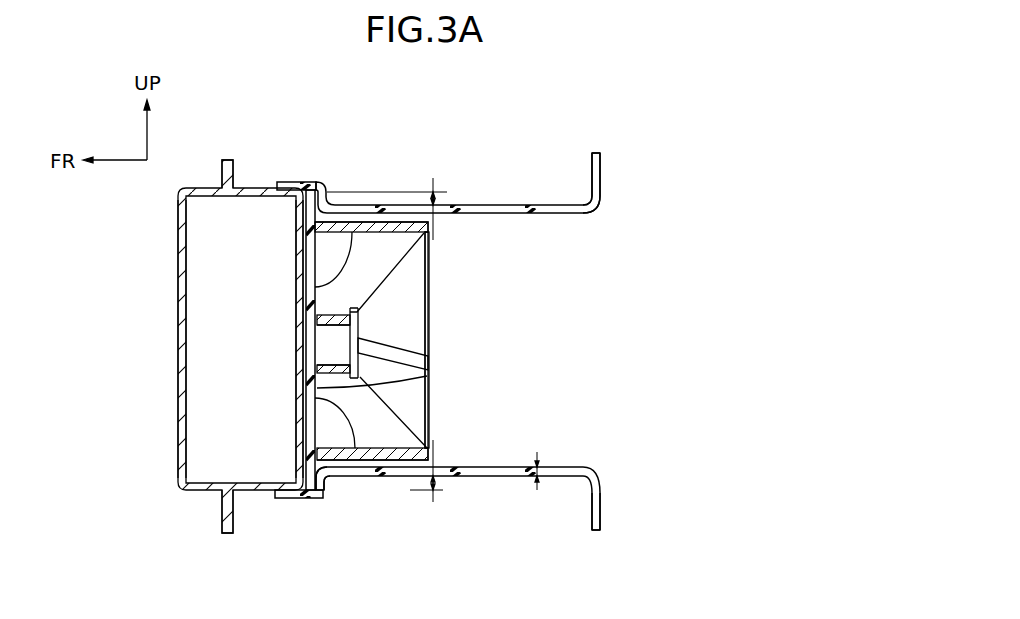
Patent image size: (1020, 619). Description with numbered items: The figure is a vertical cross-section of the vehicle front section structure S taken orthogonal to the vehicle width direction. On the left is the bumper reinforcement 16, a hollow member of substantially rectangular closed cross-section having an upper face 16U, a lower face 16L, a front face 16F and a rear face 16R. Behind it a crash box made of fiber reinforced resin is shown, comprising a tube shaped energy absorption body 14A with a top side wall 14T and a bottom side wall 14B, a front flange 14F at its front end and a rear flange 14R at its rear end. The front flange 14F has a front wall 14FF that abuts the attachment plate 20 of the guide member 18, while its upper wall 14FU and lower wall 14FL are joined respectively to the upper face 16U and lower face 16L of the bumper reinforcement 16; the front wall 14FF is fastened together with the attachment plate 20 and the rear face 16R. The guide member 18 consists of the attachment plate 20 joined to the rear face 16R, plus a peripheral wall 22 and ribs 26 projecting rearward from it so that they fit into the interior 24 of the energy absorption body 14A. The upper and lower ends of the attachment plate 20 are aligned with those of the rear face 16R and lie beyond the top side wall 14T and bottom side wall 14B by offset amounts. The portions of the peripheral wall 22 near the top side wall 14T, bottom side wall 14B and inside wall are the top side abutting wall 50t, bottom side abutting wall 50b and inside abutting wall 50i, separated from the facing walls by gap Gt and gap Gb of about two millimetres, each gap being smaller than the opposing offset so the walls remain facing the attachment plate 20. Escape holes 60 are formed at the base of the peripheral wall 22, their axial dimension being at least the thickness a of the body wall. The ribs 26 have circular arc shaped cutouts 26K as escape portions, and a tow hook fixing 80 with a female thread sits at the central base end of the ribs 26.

The vehicle front section structure S is at (600, 118).
The energy absorption body 14A is at (528, 203).
The bottom side wall 14B is at (578, 457).
The rear flange 14R is at (610, 175).
The top side wall 14T is at (557, 216).
The front flange 14F is at (313, 180).
The upper wall 14FU is at (287, 180).
The lower wall 14FL is at (300, 502).
The front wall 14FF is at (327, 480).
The bumper reinforcement 16 is at (178, 298).
The upper face 16U is at (250, 184).
The lower face 16L is at (258, 496).
The front face 16F is at (178, 333).
The rear face 16R is at (303, 353).
The guide member 18 is at (343, 342).
The attachment plate 20 is at (428, 375).
The peripheral wall 22 is at (384, 221).
The interior 24 is at (439, 271).
The rib 26 is at (388, 273).
The cutout 26K is at (344, 256).
The top side abutting wall 50t is at (432, 232).
The bottom side abutting wall 50b is at (430, 440).
The inside abutting wall 50i is at (430, 318).
The escape hole 60 is at (334, 238).
The tow hook fixing 80 is at (351, 323).
The gap Gt is at (436, 216).
The gap Gb is at (433, 462).
The thickness a is at (544, 474).